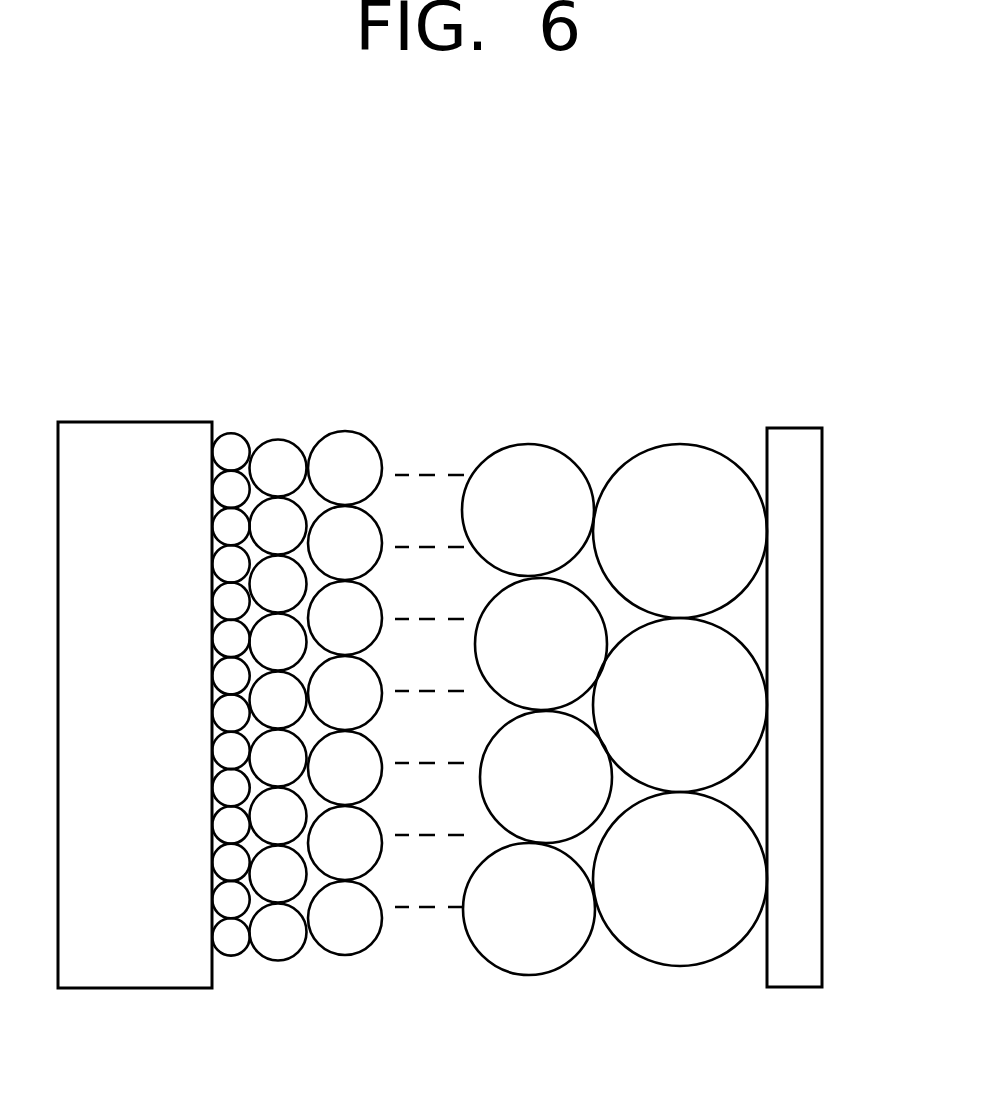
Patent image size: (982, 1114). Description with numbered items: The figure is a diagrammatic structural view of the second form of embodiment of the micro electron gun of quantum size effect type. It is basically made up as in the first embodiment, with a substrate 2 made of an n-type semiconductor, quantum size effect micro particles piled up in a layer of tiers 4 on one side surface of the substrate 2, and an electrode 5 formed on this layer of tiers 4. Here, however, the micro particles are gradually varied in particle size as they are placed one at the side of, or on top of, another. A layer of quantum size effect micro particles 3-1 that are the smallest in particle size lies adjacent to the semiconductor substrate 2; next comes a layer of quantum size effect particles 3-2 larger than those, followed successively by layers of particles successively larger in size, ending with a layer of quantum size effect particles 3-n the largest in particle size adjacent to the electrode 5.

The substrate 2 is at (140, 452).
The electrode 5 is at (788, 445).
The layer of tiers 4 is at (434, 374).
The quantum size effect micro particles the smallest in particle size 3-1 is at (232, 945).
The quantum size effect particles larger than the smallest 3-2 is at (282, 945).
The quantum size effect particles the largest in particle size 3-n is at (658, 948).